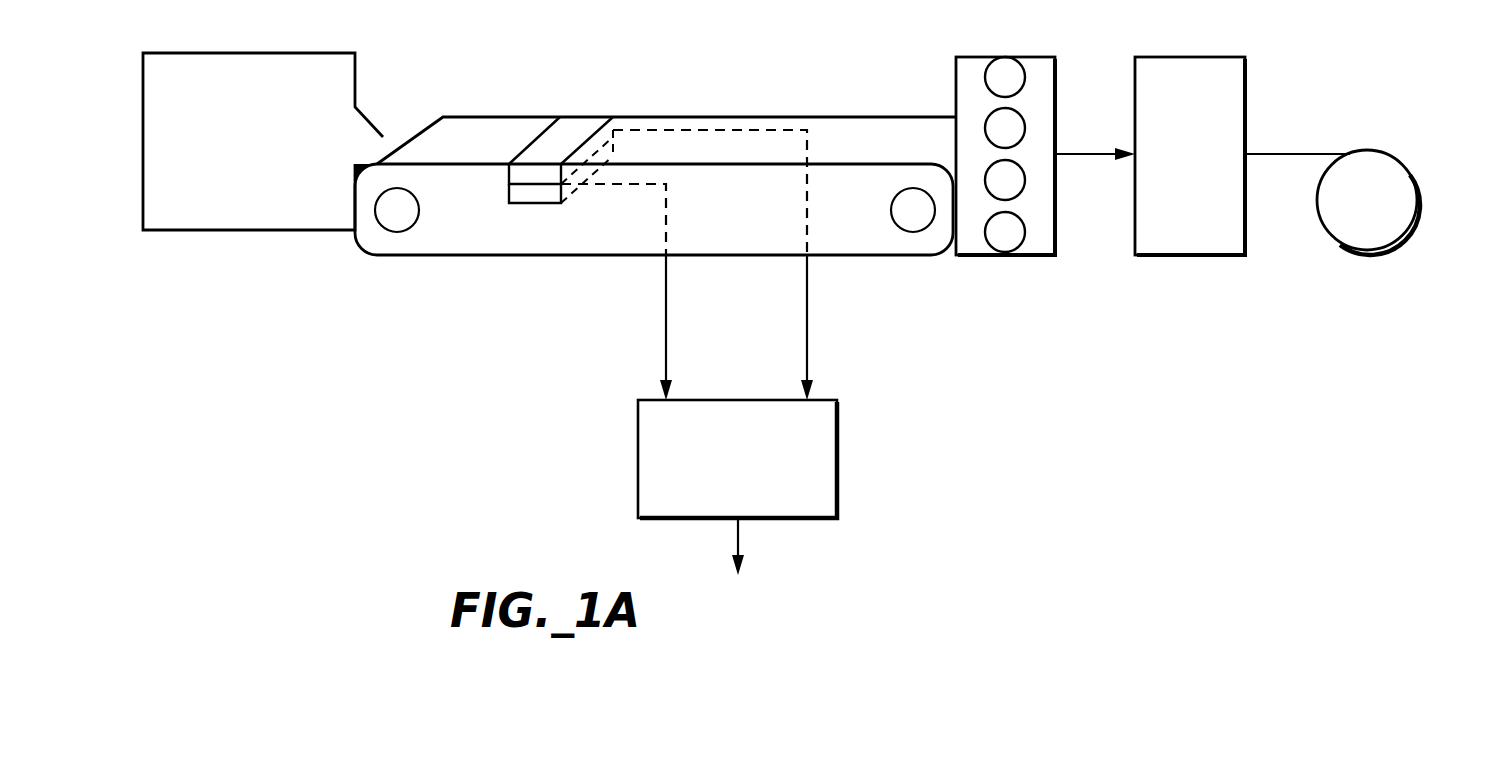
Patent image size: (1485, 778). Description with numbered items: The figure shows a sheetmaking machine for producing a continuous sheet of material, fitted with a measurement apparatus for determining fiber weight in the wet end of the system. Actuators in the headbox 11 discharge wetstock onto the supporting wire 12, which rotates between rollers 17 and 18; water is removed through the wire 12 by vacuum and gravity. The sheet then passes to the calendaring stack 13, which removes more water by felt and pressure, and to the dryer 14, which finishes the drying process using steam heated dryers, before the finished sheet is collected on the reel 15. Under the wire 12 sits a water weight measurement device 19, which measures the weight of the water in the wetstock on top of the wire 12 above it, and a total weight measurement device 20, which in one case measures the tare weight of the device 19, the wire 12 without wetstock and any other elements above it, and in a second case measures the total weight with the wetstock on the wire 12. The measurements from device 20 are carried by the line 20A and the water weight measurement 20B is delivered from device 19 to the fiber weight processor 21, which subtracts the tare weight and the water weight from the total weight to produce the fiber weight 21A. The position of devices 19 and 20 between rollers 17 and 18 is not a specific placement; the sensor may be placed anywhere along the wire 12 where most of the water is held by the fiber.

The headbox 11 is at (253, 53).
The wire 12 is at (727, 117).
The calendaring stack 13 is at (1007, 57).
The dryer 14 is at (1190, 57).
The reel 15 is at (1405, 170).
The roller 17 is at (397, 210).
The roller 18 is at (913, 210).
The water weight measurement device 19 is at (520, 177).
The total weight measurement device 20 is at (525, 196).
The total weight measurement signal 20A is at (665, 322).
The water weight measurement 20B is at (807, 335).
The fiber weight processor 21 is at (705, 400).
The fiber weight 21A is at (740, 540).